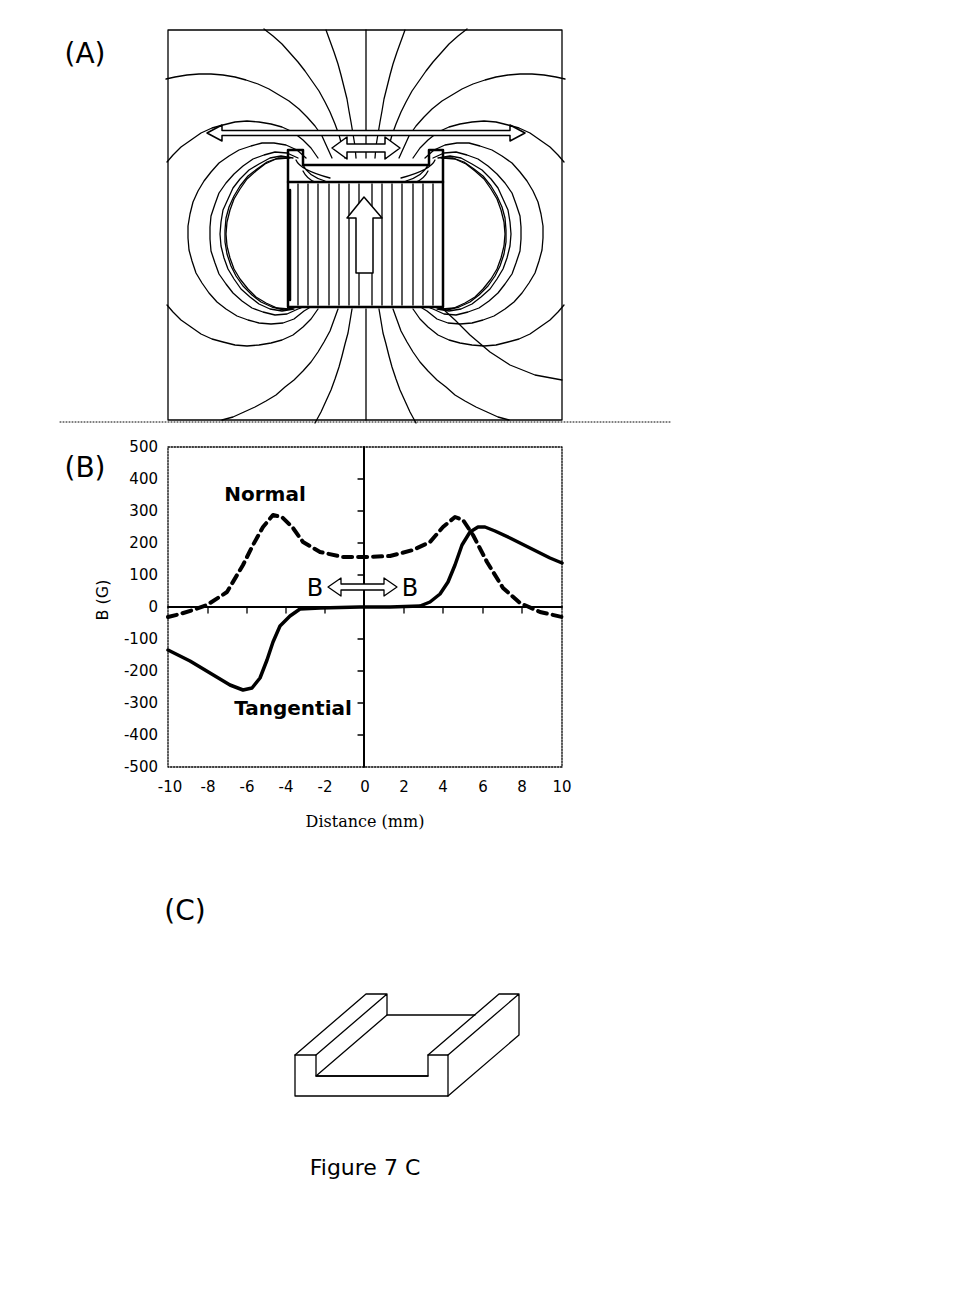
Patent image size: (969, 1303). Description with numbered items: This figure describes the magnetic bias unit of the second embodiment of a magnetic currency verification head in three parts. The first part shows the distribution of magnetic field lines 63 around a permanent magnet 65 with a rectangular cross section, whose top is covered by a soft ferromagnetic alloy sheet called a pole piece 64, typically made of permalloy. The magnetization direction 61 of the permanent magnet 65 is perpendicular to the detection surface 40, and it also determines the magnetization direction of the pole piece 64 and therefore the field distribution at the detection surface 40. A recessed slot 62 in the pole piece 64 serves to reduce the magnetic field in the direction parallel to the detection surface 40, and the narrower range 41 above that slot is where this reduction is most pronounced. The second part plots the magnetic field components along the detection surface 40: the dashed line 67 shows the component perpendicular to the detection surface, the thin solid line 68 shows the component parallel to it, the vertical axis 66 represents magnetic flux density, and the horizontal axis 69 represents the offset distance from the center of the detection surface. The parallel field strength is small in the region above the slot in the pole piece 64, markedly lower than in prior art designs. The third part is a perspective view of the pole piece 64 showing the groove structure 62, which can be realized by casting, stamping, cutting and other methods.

The detection surface 40 is at (480, 133).
The second scanning range arrow B 41 is at (368, 147).
The magnetization direction 61 is at (358, 253).
The recessed slot 62 is at (288, 181).
The magnetic field line 63 is at (498, 377).
The pole piece 64 is at (442, 167).
The permanent magnet 65 is at (295, 250).
The vertical axis 66 is at (365, 697).
The dashed line 67 is at (250, 553).
The thin solid line 68 is at (248, 686).
The horizontal axis 69 is at (483, 612).